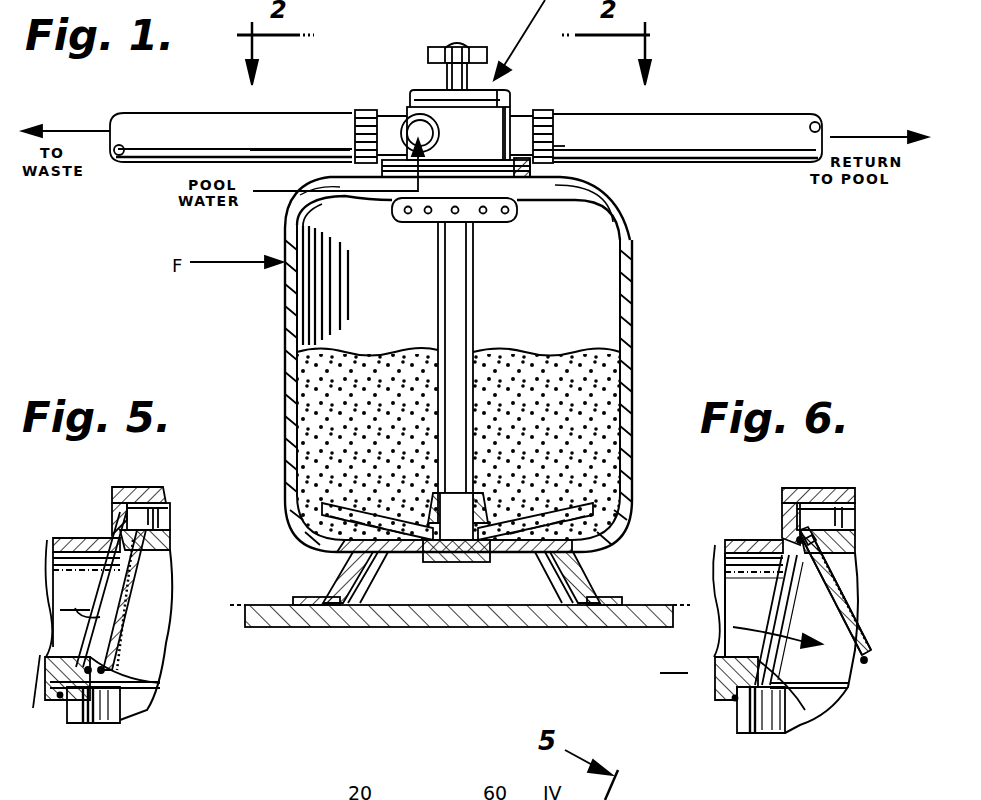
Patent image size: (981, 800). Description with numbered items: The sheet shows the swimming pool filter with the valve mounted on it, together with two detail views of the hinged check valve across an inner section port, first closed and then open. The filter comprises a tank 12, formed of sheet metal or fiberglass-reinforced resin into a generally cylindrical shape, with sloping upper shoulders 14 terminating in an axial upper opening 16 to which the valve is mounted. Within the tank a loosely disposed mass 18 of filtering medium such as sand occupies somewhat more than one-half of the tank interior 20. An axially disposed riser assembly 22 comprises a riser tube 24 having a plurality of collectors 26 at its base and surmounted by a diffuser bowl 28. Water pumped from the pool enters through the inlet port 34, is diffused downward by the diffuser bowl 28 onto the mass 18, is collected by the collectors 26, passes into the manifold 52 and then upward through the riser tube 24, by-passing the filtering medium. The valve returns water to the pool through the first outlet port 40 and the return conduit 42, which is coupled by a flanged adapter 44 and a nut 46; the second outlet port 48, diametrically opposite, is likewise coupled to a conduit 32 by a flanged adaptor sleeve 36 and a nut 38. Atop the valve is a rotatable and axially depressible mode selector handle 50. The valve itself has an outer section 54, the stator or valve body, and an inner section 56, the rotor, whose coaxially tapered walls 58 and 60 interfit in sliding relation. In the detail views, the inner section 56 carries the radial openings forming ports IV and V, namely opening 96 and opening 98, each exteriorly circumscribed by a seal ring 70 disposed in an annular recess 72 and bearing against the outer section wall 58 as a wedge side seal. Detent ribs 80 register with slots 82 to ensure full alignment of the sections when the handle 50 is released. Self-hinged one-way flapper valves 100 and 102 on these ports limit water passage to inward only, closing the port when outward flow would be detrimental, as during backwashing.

In FIG. 1, the tank 12 is at (632, 297).
In FIG. 1, the sloping upper shoulders 14 is at (640, 214).
In FIG. 1, the axial upper opening 16 is at (520, 176).
In FIG. 1, the mass of filtering medium 18 is at (590, 380).
In FIG. 1, the tank interior 20 is at (592, 262).
In FIG. 1, the riser assembly 22 is at (420, 300).
In FIG. 1, the riser tube 24 is at (460, 322).
In FIG. 1, the collectors 26 is at (368, 505).
In FIG. 1, the diffuser bowl 28 is at (415, 215).
In FIG. 5, the diffuser bowl 28 is at (93, 725).
In FIG. 6, the diffuser bowl 28 is at (737, 728).
In FIG. 1, the conduit 32 is at (171, 113).
In FIG. 1, the inlet port 34 is at (424, 117).
In FIG. 6, the inlet port 34 is at (730, 540).
In FIG. 1, the flanged adaptor sleeve 36 is at (332, 133).
In FIG. 1, the nut 38 is at (355, 118).
In FIG. 1, the first outlet port 40 is at (522, 123).
In FIG. 5, the first outlet port 40 is at (60, 538).
In FIG. 1, the return conduit 42 is at (788, 114).
In FIG. 1, the flanged adapter 44 is at (560, 130).
In FIG. 1, the nut 46 is at (557, 145).
In FIG. 1, the second outlet port 48 is at (390, 122).
In FIG. 1, the mode selector handle 50 is at (481, 50).
In FIG. 1, the manifold 52 is at (495, 500).
In FIG. 1, the outer section 54 is at (458, 125).
In FIG. 5, the outer section 54 is at (128, 487).
In FIG. 6, the outer section 54 is at (808, 488).
In FIG. 5, the inner section 56 is at (162, 550).
In FIG. 6, the inner section 56 is at (853, 545).
In FIG. 1, the tapered wall 58 is at (520, 108).
In FIG. 5, the tapered wall 60 is at (122, 688).
In FIG. 5, the seal ring 70 is at (112, 528).
In FIG. 6, the seal ring 70 is at (790, 700).
In FIG. 6, the annular recess 72 is at (792, 538).
In FIG. 5, the detent ribs 80 is at (168, 524).
In FIG. 6, the detent ribs 80 is at (840, 524).
In FIG. 5, the slots 82 is at (163, 508).
In FIG. 6, the slots 82 is at (855, 509).
In FIG. 5, the opening 96 is at (42, 660).
In FIG. 6, the opening 98 is at (782, 596).
In FIG. 6, the flapper valve 100 is at (872, 672).
In FIG. 5, the flapper valve 102 is at (145, 640).